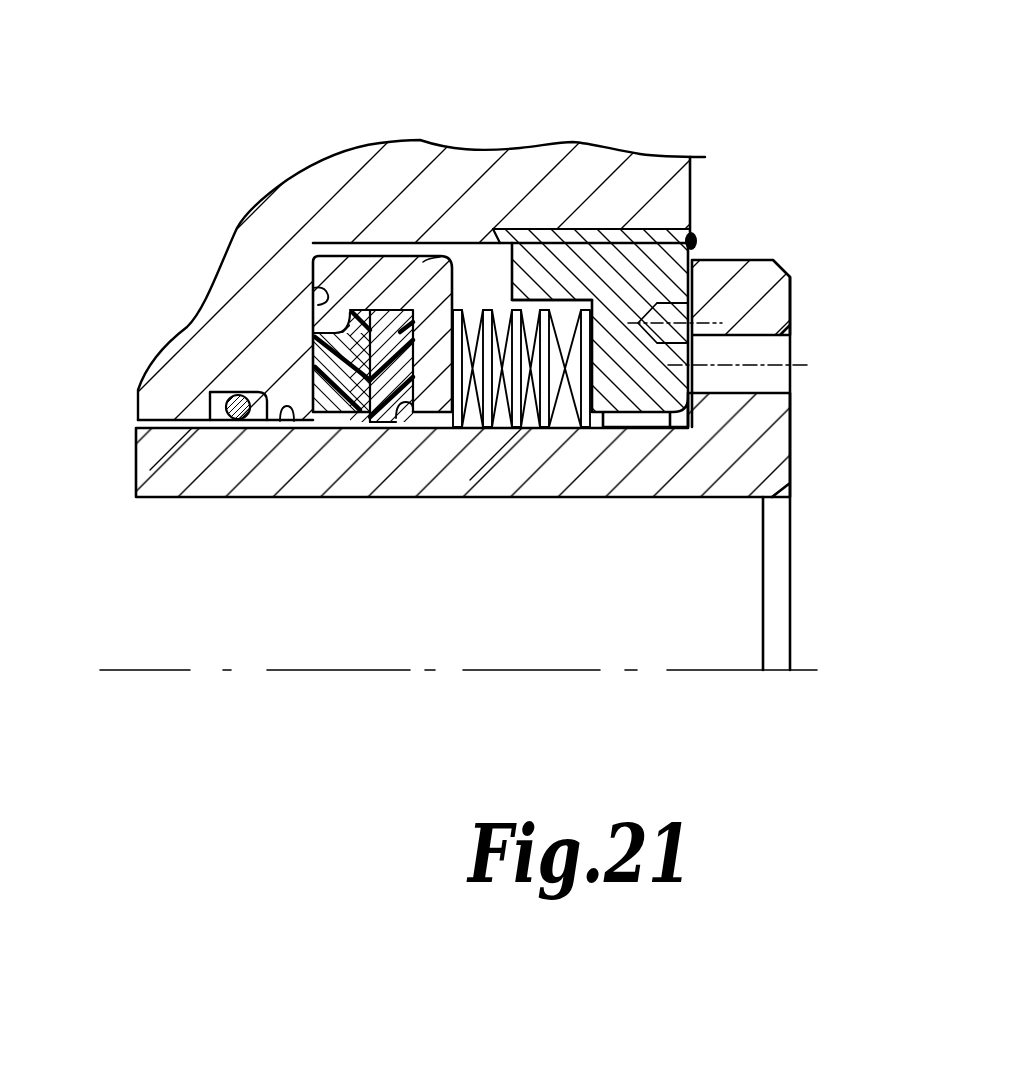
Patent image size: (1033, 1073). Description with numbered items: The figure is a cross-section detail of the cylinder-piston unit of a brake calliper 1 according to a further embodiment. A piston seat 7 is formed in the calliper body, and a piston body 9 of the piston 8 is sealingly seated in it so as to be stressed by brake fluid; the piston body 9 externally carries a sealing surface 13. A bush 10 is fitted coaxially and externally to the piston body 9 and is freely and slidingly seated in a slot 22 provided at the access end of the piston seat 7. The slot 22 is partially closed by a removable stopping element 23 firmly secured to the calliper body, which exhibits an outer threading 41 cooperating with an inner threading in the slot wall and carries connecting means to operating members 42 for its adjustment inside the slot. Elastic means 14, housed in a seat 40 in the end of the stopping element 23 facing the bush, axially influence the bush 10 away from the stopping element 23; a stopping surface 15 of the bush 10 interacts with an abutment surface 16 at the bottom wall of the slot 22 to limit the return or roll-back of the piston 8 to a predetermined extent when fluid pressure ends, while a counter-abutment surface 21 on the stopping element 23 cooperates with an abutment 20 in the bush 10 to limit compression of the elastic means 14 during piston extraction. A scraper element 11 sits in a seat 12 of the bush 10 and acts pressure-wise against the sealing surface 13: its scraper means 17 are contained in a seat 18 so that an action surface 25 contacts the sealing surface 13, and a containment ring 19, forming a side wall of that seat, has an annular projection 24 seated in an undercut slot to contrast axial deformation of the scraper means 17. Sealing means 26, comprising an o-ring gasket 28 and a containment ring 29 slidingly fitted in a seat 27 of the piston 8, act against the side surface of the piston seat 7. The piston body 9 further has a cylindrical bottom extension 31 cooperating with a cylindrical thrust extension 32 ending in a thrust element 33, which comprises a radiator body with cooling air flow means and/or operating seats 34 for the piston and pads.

The brake calliper 1 is at (834, 145).
The piston seat 7 is at (137, 438).
The piston 8 is at (814, 486).
The piston body 9 is at (481, 462).
The bush 10 is at (423, 262).
The scraper element 11 is at (382, 428).
The seat 12 is at (402, 427).
The sealing surface 13 is at (288, 427).
The elastic means 14 is at (560, 420).
The stopping surface 15 is at (315, 308).
The abutment surface 16 is at (326, 291).
The scraper means 17 is at (396, 328).
The seat 18 is at (400, 285).
The containment ring 19 is at (345, 428).
The abutment 20 is at (463, 395).
The counter-abutment surface 21 is at (503, 420).
The slot 22 is at (468, 250).
The stopping element 23 is at (628, 258).
The annular projection 24 is at (693, 241).
The action surface 25 is at (397, 428).
The sealing means 26 is at (220, 428).
The seat 27 is at (233, 392).
The o-ring gasket 28 is at (226, 404).
The containment ring 29 is at (214, 446).
The cylindrical bottom extension 31 is at (162, 470).
The cylindrical thrust extension 32 is at (643, 480).
The thrust element 33 is at (676, 336).
The operating seats 34 is at (757, 392).
The seat 40 is at (536, 323).
The outer threading 41 is at (592, 242).
The operating members 42 is at (693, 323).